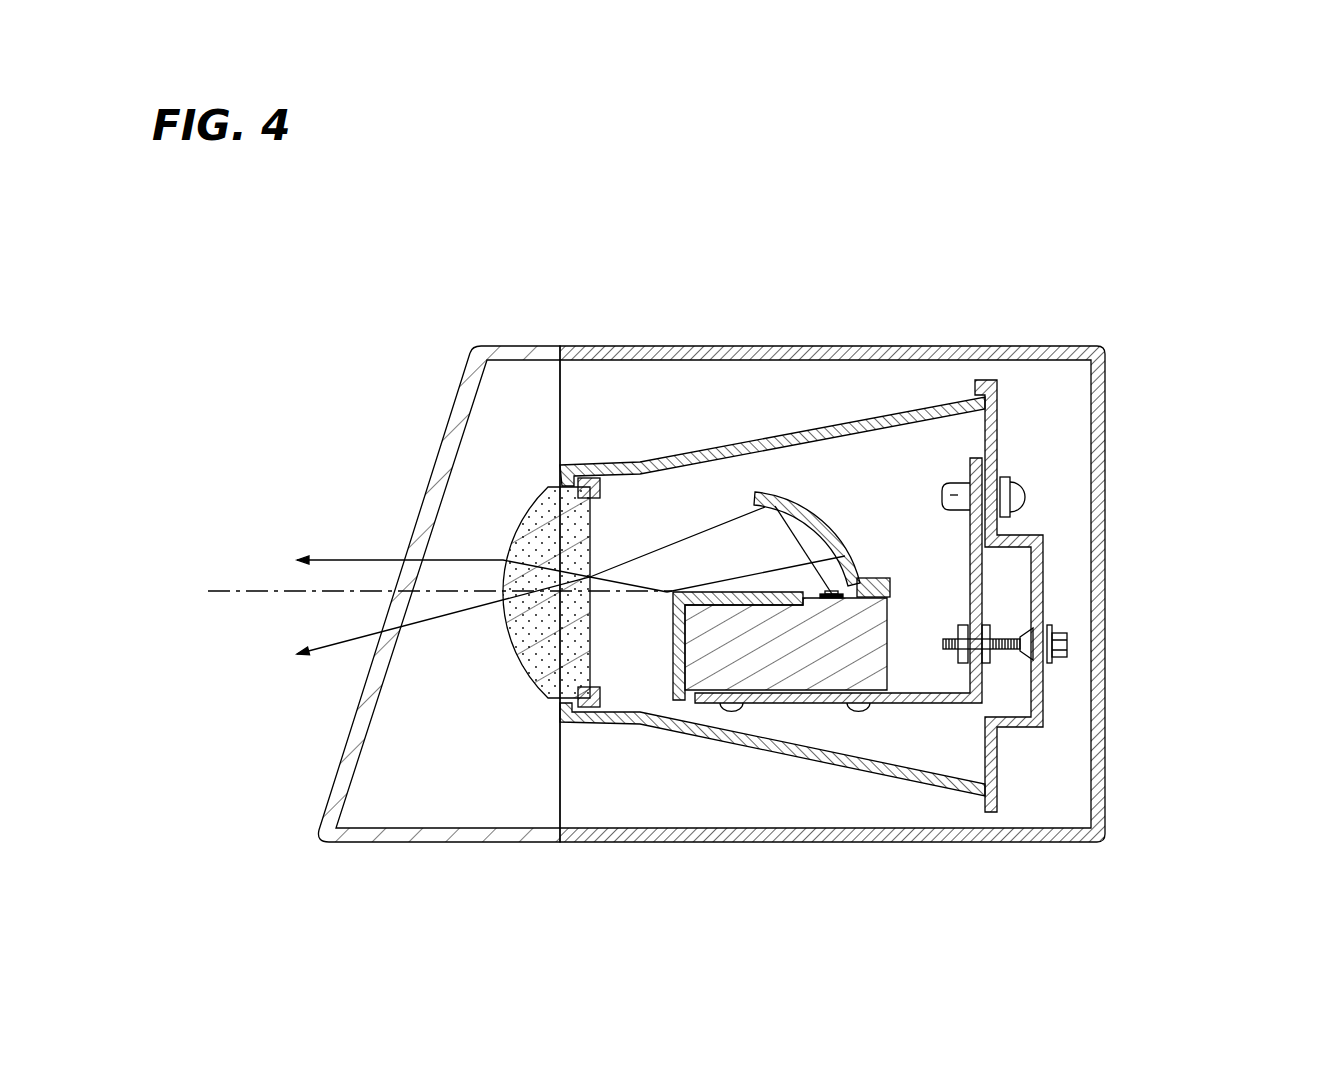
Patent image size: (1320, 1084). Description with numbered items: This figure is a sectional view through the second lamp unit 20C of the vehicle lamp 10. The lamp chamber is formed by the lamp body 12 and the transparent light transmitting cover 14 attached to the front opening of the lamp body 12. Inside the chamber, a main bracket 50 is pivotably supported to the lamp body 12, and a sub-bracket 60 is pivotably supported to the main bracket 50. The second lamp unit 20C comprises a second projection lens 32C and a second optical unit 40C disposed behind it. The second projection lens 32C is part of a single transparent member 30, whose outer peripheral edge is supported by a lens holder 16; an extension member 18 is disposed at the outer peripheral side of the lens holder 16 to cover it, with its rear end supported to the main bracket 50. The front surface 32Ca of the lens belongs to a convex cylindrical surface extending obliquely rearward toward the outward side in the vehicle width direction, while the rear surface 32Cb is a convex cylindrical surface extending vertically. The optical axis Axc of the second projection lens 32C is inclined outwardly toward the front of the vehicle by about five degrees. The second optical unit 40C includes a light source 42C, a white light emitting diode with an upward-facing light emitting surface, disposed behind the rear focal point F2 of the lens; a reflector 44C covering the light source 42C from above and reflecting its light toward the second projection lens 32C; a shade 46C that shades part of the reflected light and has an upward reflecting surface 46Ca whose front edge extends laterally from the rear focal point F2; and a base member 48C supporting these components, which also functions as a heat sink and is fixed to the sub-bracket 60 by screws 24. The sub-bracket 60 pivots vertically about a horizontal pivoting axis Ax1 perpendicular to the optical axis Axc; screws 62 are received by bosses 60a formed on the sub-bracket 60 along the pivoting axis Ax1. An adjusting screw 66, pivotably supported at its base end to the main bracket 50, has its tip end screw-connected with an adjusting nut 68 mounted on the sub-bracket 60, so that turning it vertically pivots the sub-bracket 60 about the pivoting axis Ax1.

The vehicle lamp 10 is at (487, 270).
The lamp body 12 is at (1110, 375).
The light transmitting cover 14 is at (462, 372).
The lens holder 16 is at (606, 487).
The extension member 18 is at (610, 458).
The second lamp unit 20C is at (510, 440).
The screws 24 is at (732, 708).
The transparent member 30 is at (487, 624).
The second projection lens 32C is at (505, 540).
The front surface 32Ca is at (510, 645).
The rear surface 32Cb is at (592, 622).
The second optical unit 40C is at (805, 500).
The light source 42C is at (838, 592).
The reflector 44C is at (823, 517).
The shade 46C is at (673, 684).
The upward reflecting surface 46Ca is at (710, 592).
The base member 48C is at (847, 628).
The main bracket 50 is at (1048, 553).
The sub-bracket 60 is at (913, 706).
The bosses 60a is at (942, 494).
The screws 62 is at (1022, 497).
The adjusting screw 66 is at (1065, 647).
The adjusting nut 68 is at (962, 652).
The pivoting axis Ax1 is at (945, 494).
The optical axis Axc is at (276, 588).
The rear focal point F2 is at (672, 592).